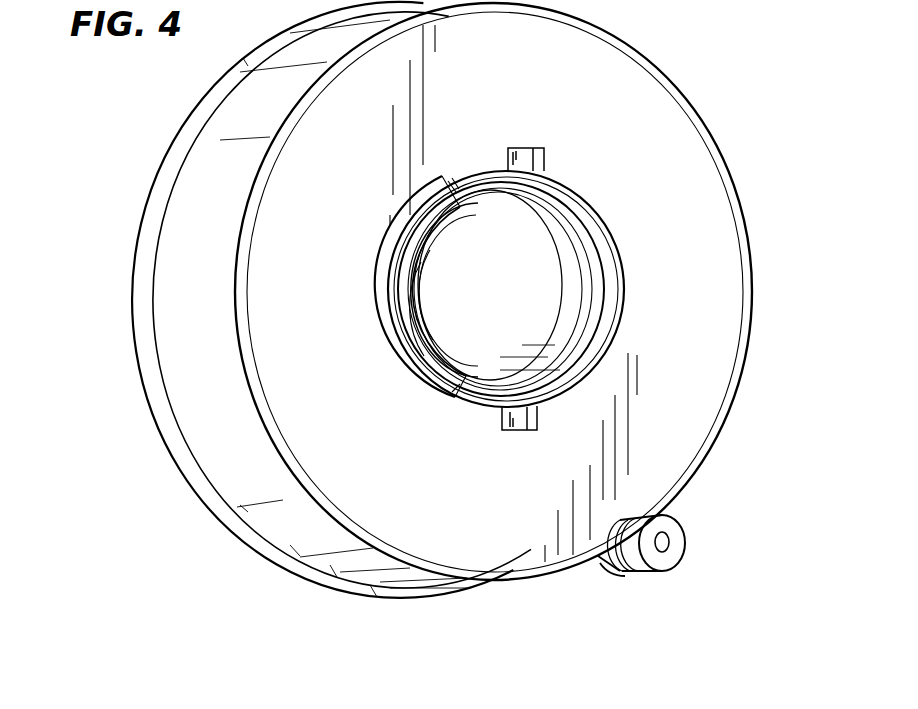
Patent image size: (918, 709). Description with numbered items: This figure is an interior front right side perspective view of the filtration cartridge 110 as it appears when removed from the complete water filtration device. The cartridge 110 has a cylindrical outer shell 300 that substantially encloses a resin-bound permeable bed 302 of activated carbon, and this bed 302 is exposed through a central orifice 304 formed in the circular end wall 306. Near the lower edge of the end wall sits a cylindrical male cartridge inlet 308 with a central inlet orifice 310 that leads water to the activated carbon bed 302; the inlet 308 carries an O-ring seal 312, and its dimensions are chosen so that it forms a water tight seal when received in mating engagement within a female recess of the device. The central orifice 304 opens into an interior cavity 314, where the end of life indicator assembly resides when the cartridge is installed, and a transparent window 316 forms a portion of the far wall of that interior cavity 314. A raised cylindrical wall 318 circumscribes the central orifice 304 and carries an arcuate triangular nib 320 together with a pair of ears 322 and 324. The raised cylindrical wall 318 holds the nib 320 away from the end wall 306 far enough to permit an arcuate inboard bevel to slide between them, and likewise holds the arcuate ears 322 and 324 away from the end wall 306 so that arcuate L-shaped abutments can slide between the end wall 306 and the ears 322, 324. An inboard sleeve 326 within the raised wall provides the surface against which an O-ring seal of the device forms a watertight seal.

The filtration cartridge 110 is at (706, 86).
The cylindrical outer shell 300 is at (700, 190).
The resin-bound permeable bed 302 is at (517, 243).
The central orifice 304 is at (492, 182).
The circular end wall 306 is at (452, 490).
The cylindrical male cartridge inlet 308 is at (688, 545).
The central inlet orifice 310 is at (670, 538).
The O-ring seal 312 is at (622, 574).
The interior cavity 314 is at (458, 318).
The transparent window 316 is at (430, 296).
The raised cylindrical wall 318 is at (590, 212).
The arcuate triangular nib 320 is at (410, 214).
The ear 322 is at (526, 148).
The ear 324 is at (512, 430).
The inboard sleeve 326 is at (570, 268).